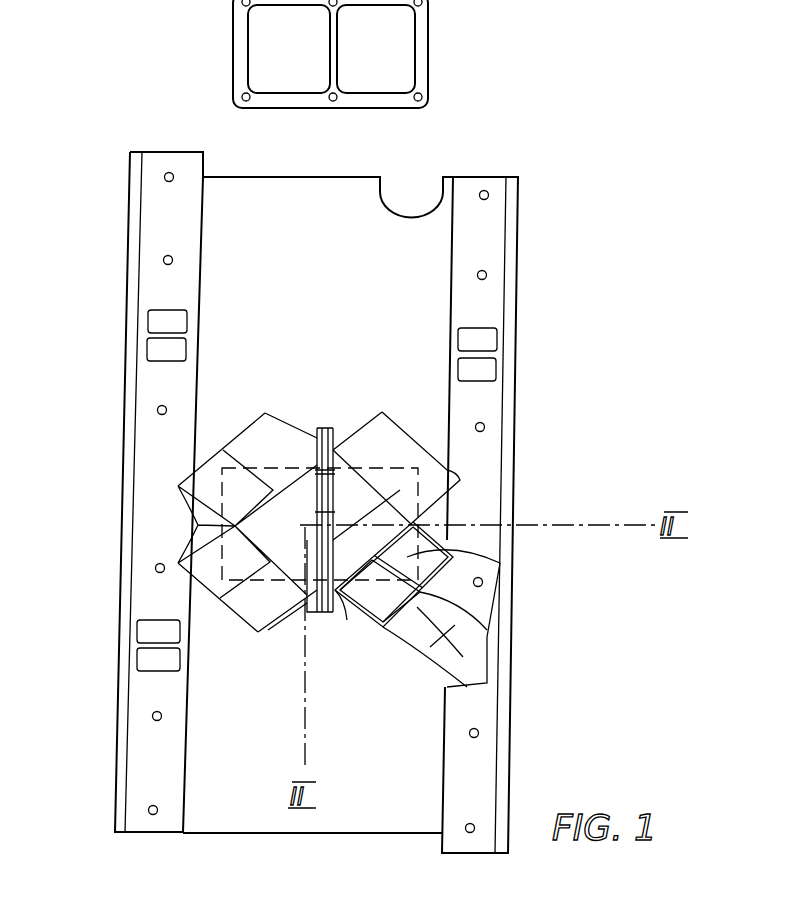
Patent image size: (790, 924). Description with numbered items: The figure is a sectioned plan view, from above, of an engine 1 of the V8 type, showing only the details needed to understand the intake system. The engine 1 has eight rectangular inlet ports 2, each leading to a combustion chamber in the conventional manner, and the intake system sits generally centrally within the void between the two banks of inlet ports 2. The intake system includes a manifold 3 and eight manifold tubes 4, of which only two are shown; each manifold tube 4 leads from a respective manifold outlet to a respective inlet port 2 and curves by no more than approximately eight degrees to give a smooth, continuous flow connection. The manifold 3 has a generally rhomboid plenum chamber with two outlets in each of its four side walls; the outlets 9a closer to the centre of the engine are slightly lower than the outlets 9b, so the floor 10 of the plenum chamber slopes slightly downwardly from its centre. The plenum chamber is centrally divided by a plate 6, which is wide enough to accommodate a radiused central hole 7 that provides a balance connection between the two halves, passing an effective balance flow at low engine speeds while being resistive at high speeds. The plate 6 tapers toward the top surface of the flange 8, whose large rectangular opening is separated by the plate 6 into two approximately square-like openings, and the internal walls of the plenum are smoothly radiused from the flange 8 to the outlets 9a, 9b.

The engine 1 is at (318, 505).
The inlet ports 2 is at (460, 338).
The manifold 3 is at (233, 627).
The manifold tubes 4 is at (432, 675).
The plate 6 is at (317, 478).
The central hole 7 is at (330, 533).
The flange 8 is at (428, 62).
The manifold outlets 9a is at (440, 548).
The manifold outlets 9b is at (373, 597).
The floor 10 is at (320, 524).